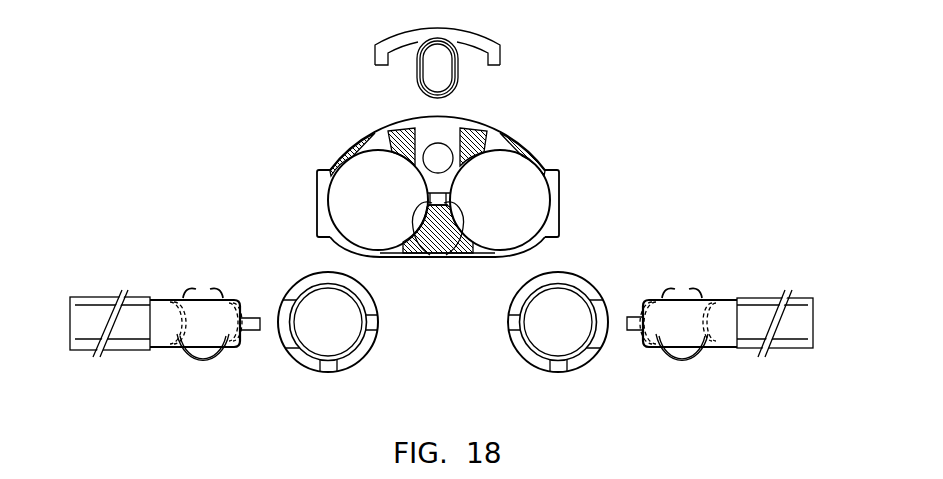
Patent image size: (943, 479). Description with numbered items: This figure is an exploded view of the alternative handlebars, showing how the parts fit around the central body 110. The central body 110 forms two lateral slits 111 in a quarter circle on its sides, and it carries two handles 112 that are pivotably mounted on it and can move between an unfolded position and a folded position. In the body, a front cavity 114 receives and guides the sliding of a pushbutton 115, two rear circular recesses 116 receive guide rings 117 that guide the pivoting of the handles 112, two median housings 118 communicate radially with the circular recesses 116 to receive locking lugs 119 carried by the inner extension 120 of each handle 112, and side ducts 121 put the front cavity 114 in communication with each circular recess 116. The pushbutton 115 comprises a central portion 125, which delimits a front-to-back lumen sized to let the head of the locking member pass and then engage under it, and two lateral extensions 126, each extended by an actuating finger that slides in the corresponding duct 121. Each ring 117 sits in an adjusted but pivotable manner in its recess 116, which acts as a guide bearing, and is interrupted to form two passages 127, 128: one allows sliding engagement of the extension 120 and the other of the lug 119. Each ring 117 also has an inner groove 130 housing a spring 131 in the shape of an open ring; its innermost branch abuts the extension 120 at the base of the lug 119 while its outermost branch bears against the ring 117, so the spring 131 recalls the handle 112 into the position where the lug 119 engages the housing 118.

The central body 110 is at (548, 165).
The lateral slit 111 is at (328, 232).
The handle 112 is at (96, 261).
The front cavity 114 is at (460, 124).
The pushbutton 115 is at (370, 45).
The rear circular recess 116 is at (348, 172).
The guide ring 117 is at (367, 358).
The median housing 118 is at (462, 228).
The locking lug 119 is at (257, 333).
The inner extension 120 is at (173, 299).
The side duct 121 is at (380, 132).
The central portion 125 is at (460, 79).
The lateral extension 126 is at (372, 55).
The passage 127 is at (282, 301).
The passage 128 is at (378, 322).
The inner groove 130 is at (332, 360).
The spring 131 is at (199, 358).